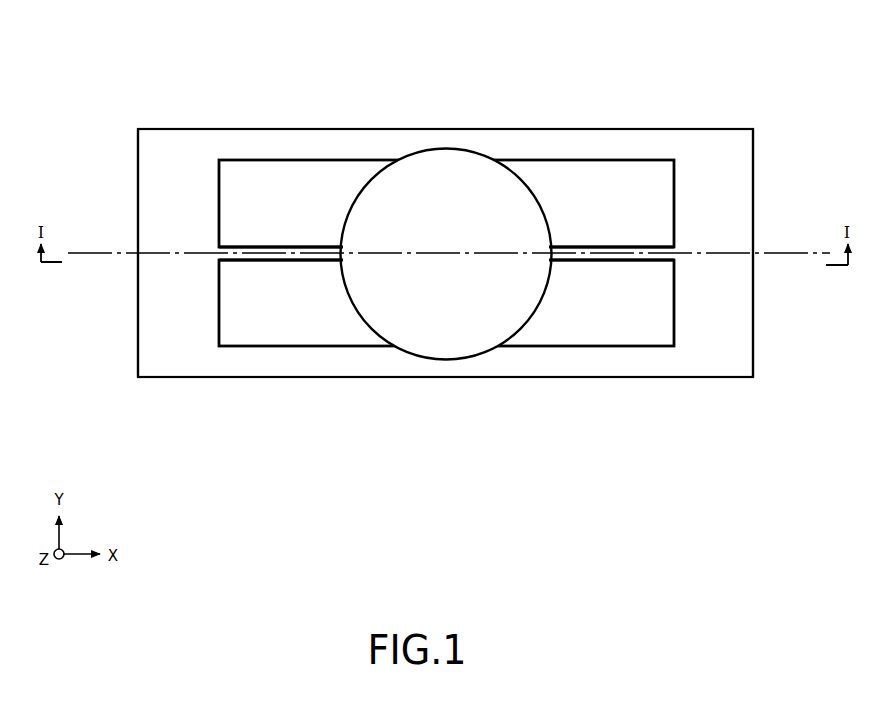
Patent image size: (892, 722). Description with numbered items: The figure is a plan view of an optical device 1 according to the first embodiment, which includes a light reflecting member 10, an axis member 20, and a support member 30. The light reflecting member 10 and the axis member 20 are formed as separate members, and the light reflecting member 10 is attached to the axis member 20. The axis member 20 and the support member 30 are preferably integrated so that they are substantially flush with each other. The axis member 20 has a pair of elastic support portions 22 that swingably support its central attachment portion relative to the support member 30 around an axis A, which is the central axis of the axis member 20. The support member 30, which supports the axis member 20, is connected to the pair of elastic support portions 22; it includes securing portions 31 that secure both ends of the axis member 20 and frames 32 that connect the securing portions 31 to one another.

The optical device 1 is at (687, 87).
The light reflecting member 10 is at (486, 351).
The axis member 20 is at (312, 263).
The elastic support portions 22 is at (292, 247).
The support member 30 is at (240, 379).
The securing portions 31 is at (165, 167).
The frames 32 is at (320, 142).
The axis A is at (105, 257).